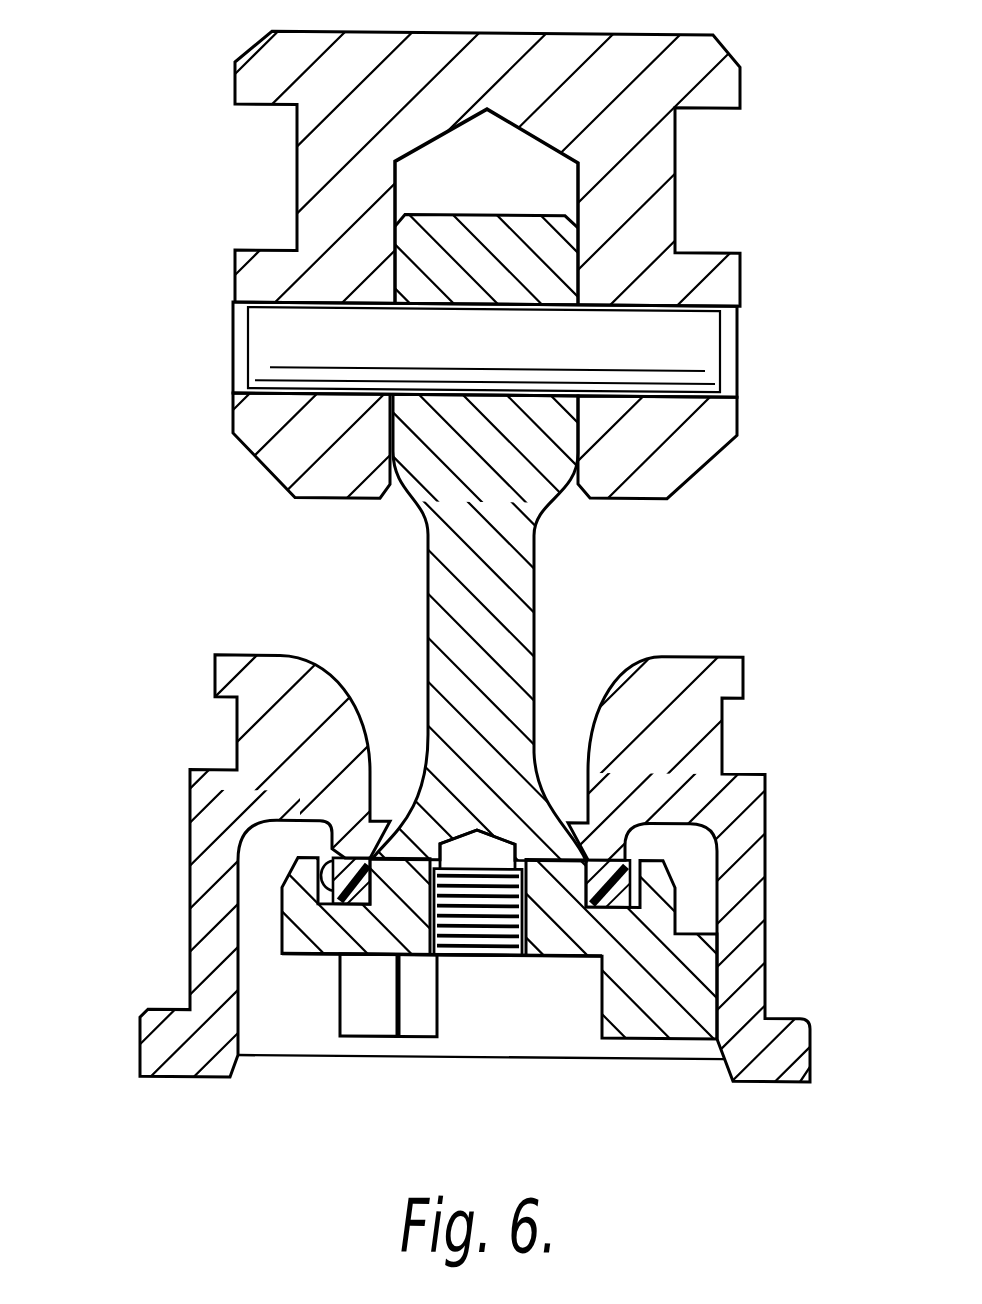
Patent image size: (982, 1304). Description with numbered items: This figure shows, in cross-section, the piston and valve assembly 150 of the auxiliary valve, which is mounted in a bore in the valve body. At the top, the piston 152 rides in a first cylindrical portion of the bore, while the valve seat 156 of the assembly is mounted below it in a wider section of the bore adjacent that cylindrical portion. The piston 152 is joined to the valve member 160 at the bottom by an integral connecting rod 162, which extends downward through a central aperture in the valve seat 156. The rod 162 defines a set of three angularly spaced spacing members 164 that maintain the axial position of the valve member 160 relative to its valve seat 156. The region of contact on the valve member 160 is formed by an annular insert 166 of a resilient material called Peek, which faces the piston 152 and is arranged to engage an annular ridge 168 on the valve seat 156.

The piston and valve assembly 150 is at (198, 48).
The piston 152 is at (327, 220).
The valve seat 156 is at (268, 715).
The valve member 160 is at (660, 908).
The connecting rod 162 is at (458, 595).
The spacing members 164 is at (380, 1007).
The annular insert 166 is at (327, 898).
The annular ridge 168 is at (323, 892).